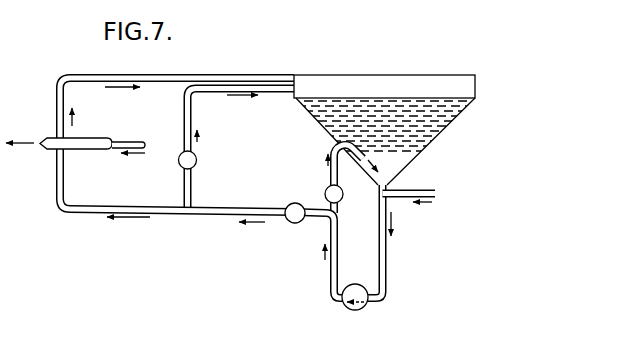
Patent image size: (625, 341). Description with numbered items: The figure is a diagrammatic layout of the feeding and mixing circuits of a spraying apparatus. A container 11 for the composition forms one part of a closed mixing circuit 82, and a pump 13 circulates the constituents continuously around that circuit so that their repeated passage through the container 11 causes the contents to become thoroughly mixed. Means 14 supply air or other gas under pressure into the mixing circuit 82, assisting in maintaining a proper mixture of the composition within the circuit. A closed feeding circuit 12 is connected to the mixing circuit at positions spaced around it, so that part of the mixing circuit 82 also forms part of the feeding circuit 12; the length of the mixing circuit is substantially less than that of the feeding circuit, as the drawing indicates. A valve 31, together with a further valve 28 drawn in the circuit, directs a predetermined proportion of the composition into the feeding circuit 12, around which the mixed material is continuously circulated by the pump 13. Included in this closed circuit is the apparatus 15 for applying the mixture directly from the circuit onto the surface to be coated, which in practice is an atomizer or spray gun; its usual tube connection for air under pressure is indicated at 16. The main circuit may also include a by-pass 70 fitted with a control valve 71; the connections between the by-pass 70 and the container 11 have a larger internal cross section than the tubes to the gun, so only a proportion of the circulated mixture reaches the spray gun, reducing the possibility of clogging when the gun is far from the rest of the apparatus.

The container 11 is at (432, 127).
The closed feeding circuit 12 is at (211, 216).
The pump 13 is at (357, 284).
The means for supplying air or other gas under pressure 14 is at (432, 190).
The apparatus for applying the mixture 15 is at (88, 140).
The tube connection for air under pressure 16 is at (133, 142).
The valve 28 is at (325, 193).
The valve 31 is at (299, 223).
The by-pass 70 is at (191, 186).
The control valve 71 is at (196, 161).
The closed mixing circuit 82 is at (387, 261).